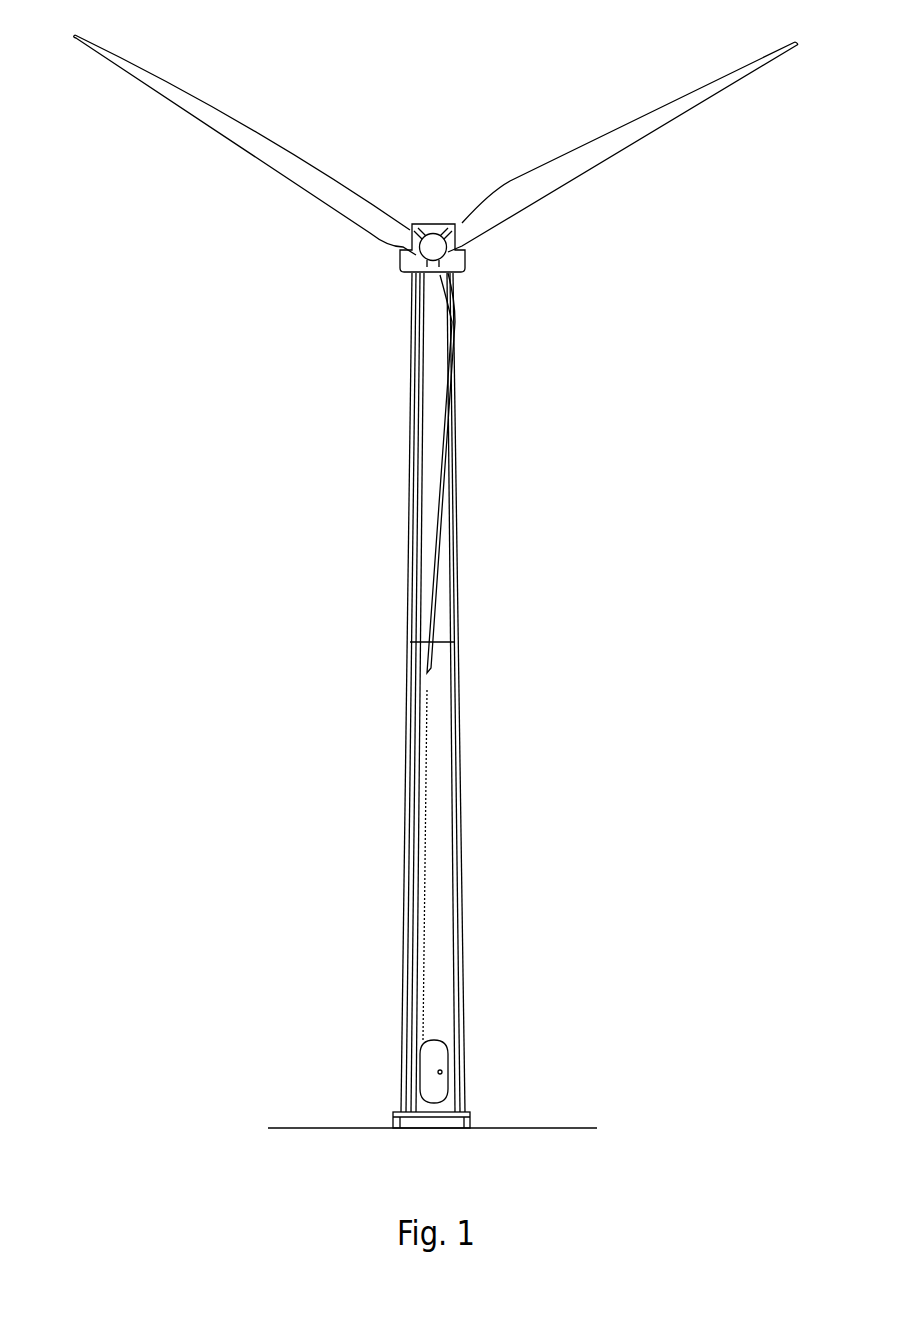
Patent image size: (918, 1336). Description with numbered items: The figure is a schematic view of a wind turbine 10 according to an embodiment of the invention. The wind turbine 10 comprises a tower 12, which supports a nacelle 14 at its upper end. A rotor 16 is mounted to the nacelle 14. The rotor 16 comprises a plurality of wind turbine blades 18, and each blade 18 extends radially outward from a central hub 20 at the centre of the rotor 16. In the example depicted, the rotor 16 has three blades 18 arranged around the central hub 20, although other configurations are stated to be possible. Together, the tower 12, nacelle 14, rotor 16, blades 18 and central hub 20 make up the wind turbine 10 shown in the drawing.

The wind turbine 10 is at (322, 555).
The tower 12 is at (458, 686).
The nacelle 14 is at (465, 270).
The rotor 16 is at (315, 317).
The wind turbine blade 18 is at (310, 167).
The central hub 20 is at (430, 234).